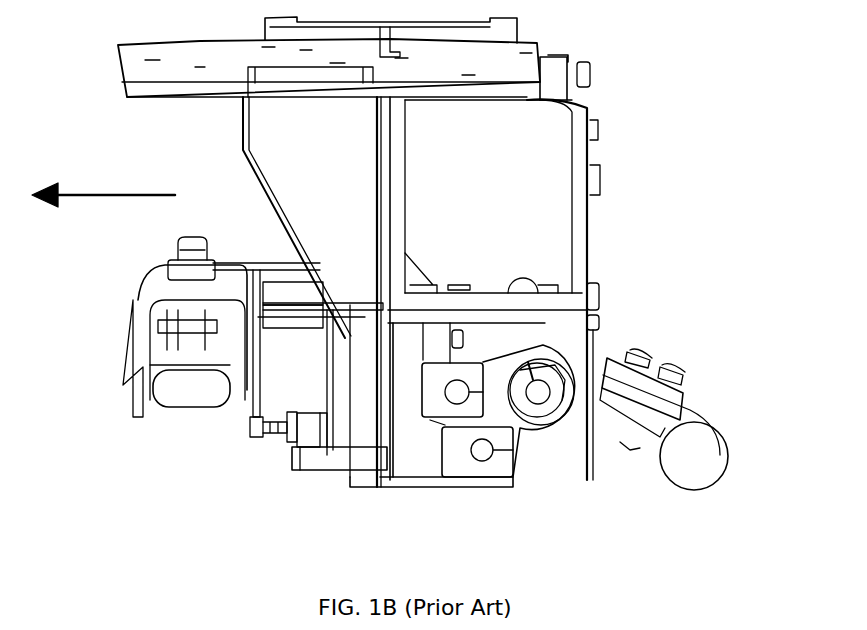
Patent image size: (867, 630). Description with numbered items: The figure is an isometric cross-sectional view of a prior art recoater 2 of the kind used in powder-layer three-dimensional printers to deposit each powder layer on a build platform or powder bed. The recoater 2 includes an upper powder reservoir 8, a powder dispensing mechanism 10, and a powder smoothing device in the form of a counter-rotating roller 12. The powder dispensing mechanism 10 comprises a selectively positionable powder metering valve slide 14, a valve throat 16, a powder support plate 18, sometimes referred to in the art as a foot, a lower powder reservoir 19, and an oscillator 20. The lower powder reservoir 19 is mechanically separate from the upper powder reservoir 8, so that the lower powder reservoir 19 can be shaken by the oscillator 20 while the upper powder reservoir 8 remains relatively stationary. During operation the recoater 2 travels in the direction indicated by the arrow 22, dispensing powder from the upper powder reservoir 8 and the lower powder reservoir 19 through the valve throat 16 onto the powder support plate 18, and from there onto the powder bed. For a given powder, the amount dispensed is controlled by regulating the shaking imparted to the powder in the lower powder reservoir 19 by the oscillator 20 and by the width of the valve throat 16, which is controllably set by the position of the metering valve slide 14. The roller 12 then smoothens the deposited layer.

The recoater 2 is at (612, 46).
The upper powder reservoir 8 is at (242, 128).
The powder dispensing mechanism 10 is at (292, 461).
The counter-rotating roller 12 is at (723, 437).
The powder metering valve slide 14 is at (313, 467).
The valve throat 16 is at (385, 453).
The powder support plate 18 is at (443, 482).
The lower powder reservoir 19 is at (350, 348).
The oscillator 20 is at (573, 362).
The arrow 22 is at (110, 197).